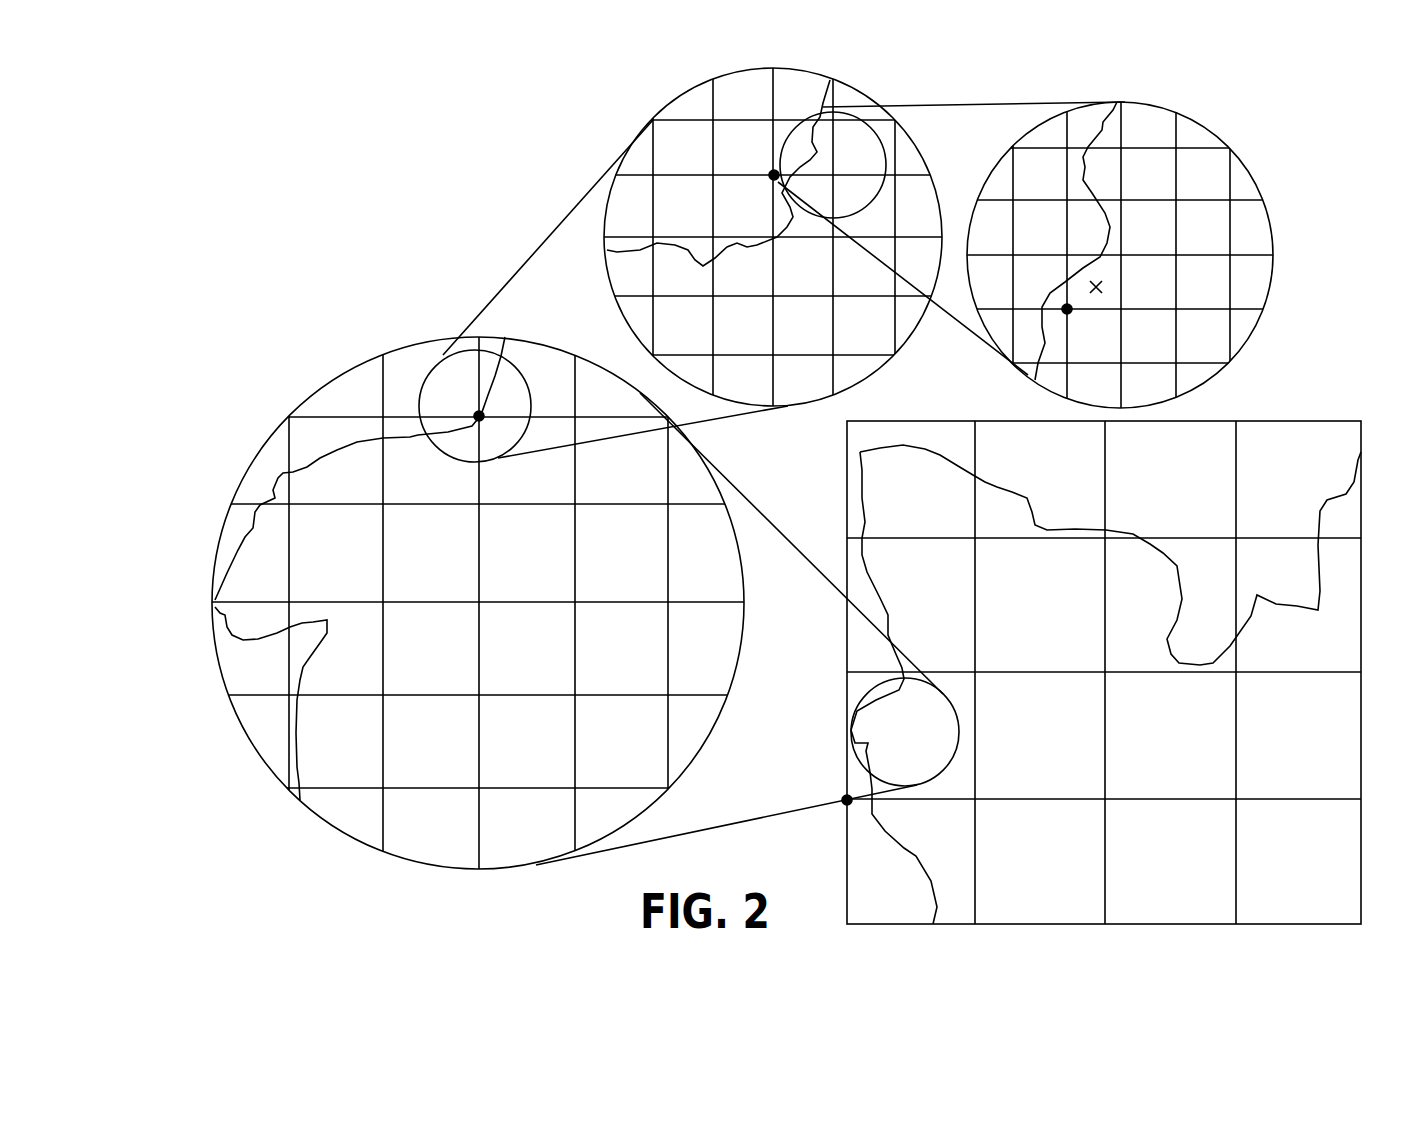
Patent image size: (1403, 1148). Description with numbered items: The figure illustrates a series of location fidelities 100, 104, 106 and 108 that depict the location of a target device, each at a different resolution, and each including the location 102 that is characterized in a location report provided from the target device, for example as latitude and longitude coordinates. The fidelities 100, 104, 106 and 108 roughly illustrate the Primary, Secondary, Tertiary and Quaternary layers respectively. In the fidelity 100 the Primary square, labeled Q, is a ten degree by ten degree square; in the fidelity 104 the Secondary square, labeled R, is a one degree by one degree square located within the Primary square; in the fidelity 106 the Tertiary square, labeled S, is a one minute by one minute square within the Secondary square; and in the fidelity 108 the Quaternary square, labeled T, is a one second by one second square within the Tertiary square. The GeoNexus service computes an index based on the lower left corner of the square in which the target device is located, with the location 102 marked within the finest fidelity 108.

The fidelity 100 is at (1089, 672).
The location 102 is at (1109, 288).
The fidelity 104 is at (480, 605).
The fidelity 106 is at (775, 240).
The fidelity 108 is at (1120, 255).